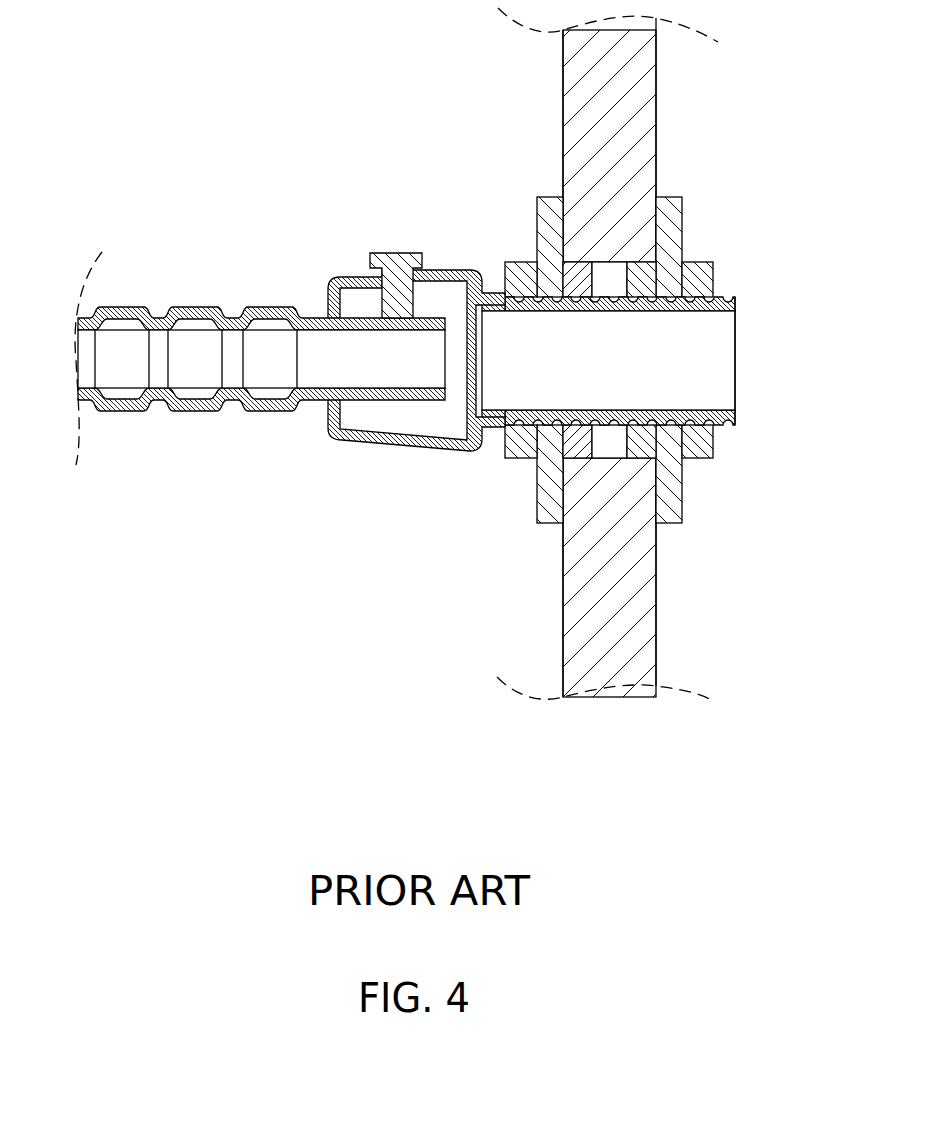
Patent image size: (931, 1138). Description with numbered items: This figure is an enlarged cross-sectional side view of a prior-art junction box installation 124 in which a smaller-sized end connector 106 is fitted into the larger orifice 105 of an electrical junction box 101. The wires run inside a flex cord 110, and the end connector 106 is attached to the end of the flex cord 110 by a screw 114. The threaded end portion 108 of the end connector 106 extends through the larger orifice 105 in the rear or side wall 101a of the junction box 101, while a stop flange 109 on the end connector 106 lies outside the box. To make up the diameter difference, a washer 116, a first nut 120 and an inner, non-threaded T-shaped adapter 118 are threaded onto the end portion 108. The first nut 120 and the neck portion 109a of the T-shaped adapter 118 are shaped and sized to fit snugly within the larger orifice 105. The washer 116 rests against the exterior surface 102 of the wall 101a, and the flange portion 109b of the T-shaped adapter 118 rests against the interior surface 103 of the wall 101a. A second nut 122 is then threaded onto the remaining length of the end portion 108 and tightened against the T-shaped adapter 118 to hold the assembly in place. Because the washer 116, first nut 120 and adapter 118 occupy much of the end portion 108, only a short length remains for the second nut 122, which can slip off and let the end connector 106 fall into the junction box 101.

The electrical junction box 101 is at (608, 354).
The rear or side wall 101a is at (632, 110).
The exterior surface 102 is at (563, 131).
The interior surface 103 is at (657, 150).
The larger orifice 105 is at (604, 254).
The end connector 106 is at (443, 452).
The threaded end portion 108 is at (735, 297).
The stop flange 109 is at (625, 412).
The neck portion 109a is at (642, 440).
The flange portion 109b is at (668, 485).
The flex cord 110 is at (200, 413).
The screw 114 is at (390, 253).
The washer 116 is at (537, 211).
The T-shaped adapter 118 is at (661, 510).
The first nut 120 is at (535, 262).
The second nut 122 is at (660, 414).
The junction box installation 124 is at (205, 140).